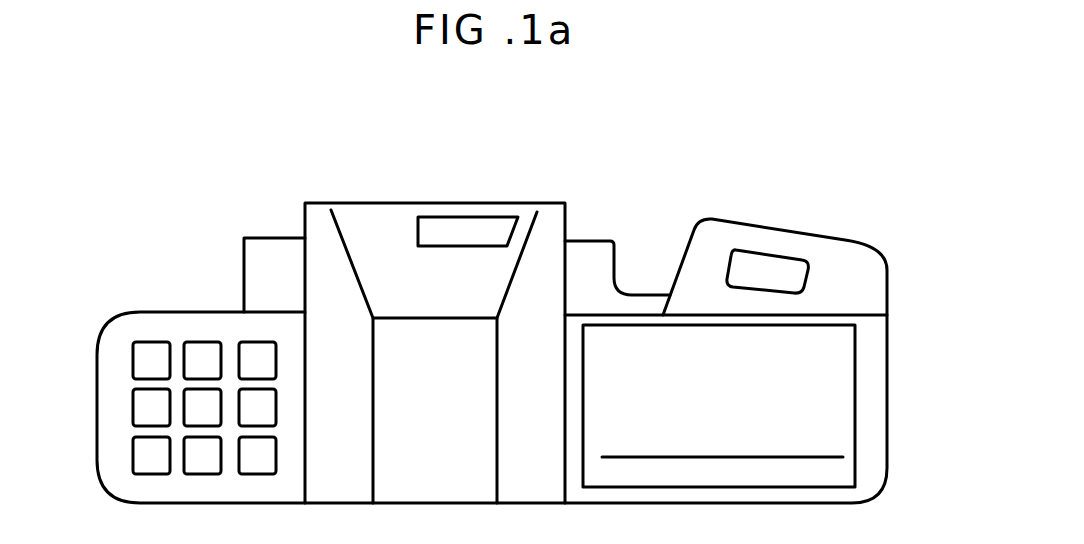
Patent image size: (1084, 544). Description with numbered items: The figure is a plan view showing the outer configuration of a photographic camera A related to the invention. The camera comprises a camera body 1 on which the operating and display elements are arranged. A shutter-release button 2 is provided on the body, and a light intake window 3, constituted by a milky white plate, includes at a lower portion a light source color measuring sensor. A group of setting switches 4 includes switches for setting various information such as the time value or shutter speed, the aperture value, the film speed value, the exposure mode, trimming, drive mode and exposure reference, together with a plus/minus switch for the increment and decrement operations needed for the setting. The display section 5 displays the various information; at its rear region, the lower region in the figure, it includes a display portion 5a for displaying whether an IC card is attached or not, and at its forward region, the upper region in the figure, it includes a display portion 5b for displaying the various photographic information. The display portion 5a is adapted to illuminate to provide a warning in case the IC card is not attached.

The camera body 1 is at (565, 227).
The shutter-release button 2 is at (770, 273).
The light intake window 3 is at (472, 227).
The group of setting switches 4 is at (141, 336).
The display section 5 is at (776, 407).
The display portion for IC card attachment 5a is at (845, 472).
The display portion for photographic information 5b is at (838, 392).
The photographic camera A is at (325, 198).